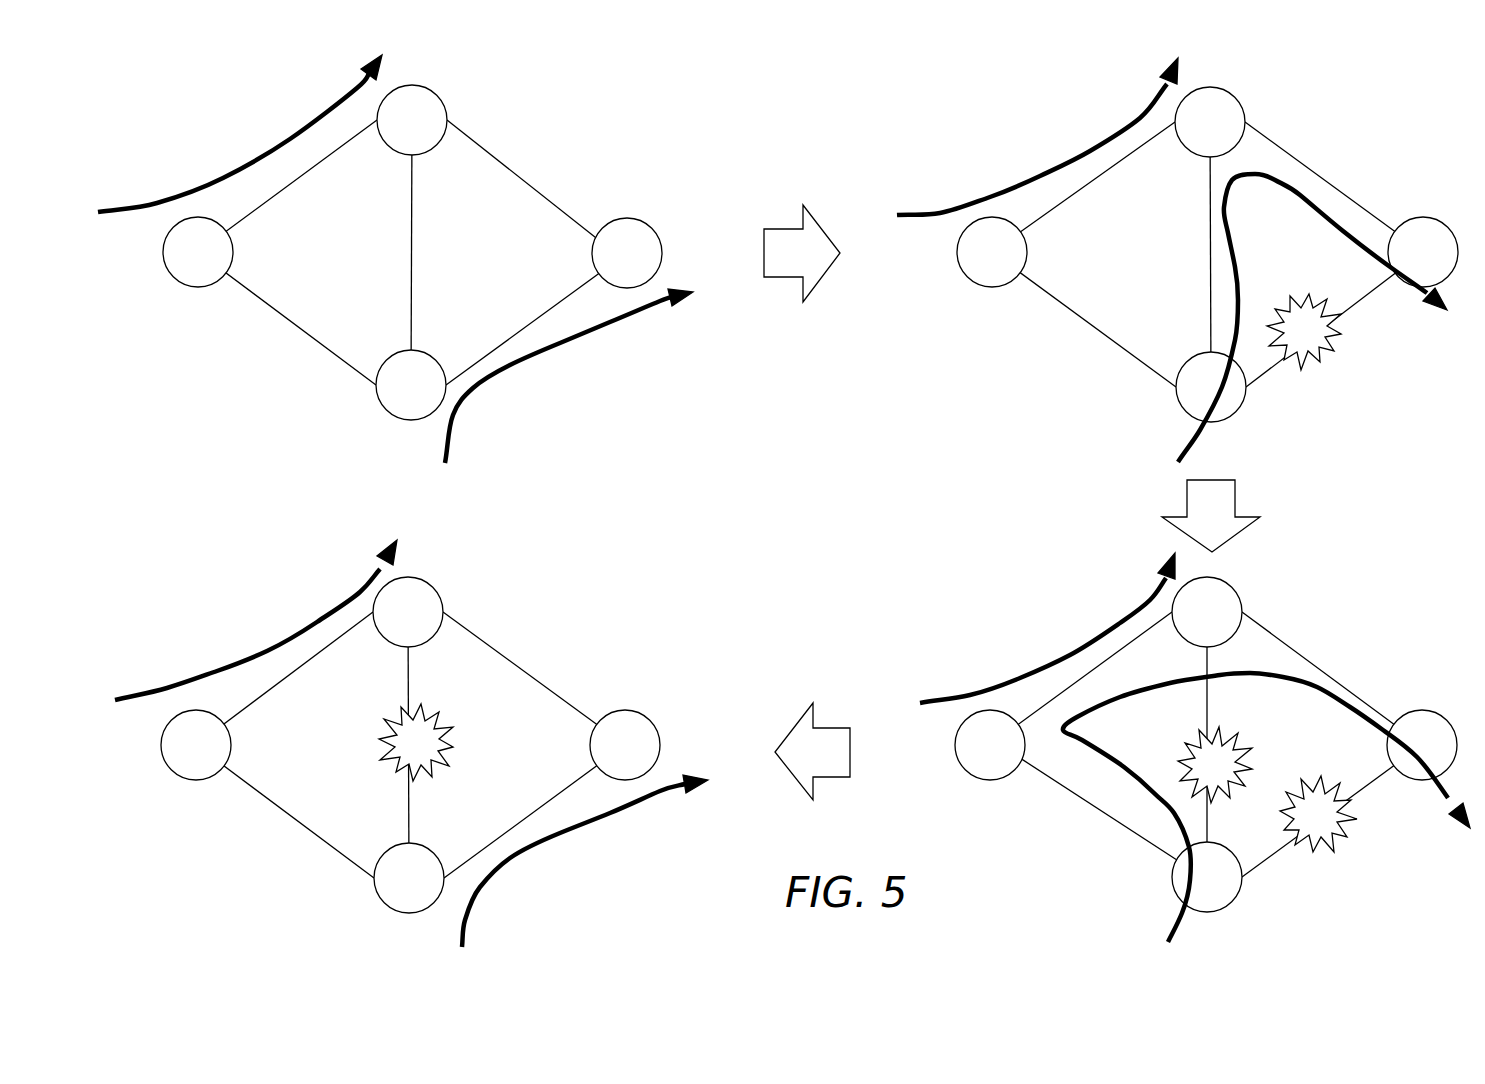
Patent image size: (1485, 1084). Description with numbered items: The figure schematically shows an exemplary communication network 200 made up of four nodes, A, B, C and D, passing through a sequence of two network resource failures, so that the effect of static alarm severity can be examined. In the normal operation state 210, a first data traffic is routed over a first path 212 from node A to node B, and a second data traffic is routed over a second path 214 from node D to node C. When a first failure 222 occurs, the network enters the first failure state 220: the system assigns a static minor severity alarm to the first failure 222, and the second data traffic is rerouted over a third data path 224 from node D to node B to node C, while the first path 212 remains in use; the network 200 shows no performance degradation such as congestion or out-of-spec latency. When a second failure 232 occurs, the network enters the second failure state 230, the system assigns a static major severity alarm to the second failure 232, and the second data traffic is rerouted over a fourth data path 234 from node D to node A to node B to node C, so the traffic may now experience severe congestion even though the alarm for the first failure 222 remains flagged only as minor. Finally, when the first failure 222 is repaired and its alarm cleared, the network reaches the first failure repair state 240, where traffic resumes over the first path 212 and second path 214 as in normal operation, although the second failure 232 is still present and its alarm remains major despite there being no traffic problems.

The communication network 200 is at (809, 499).
The normal operation state 210 is at (236, 114).
The first path 212 is at (317, 128).
The second path 214 is at (493, 378).
The first failure state 220 is at (1014, 139).
The first failure 222 is at (1323, 355).
The third data path 224 is at (1305, 193).
The second failure state 230 is at (1002, 624).
The second failure 232 is at (457, 743).
The fourth data path 234 is at (1318, 688).
The first failure repair state 240 is at (246, 606).